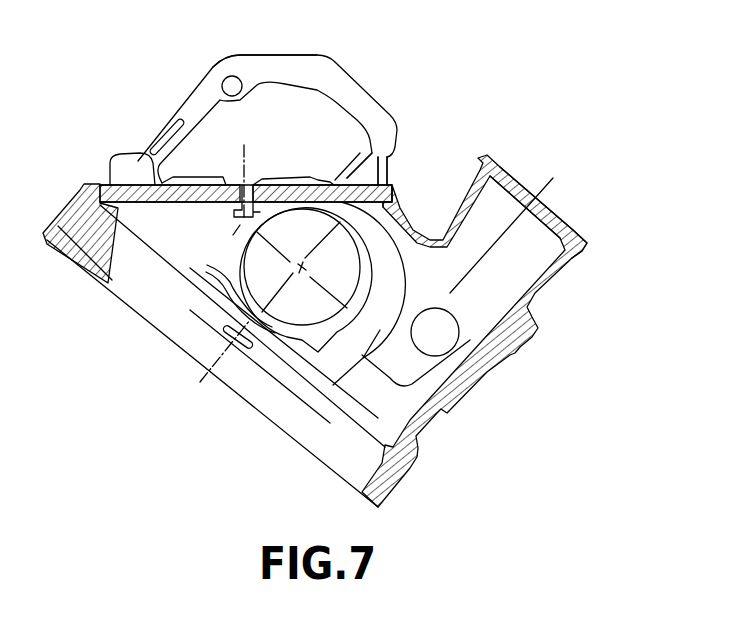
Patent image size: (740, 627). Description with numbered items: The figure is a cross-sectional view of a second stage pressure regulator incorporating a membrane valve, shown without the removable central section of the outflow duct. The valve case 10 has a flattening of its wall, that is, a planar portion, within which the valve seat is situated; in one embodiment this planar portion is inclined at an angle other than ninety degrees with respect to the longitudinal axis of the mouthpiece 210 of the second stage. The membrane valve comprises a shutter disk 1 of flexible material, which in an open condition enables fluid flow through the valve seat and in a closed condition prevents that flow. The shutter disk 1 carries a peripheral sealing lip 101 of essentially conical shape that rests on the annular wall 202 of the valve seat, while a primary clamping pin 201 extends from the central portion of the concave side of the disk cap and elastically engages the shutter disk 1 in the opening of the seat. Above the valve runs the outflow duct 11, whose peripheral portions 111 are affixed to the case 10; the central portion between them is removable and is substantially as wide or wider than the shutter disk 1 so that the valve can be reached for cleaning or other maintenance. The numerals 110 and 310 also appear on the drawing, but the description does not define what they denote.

The shutter disk 1 is at (288, 160).
The case 10 is at (489, 371).
The outflow duct 11 is at (297, 107).
The peripheral sealing lip 101 is at (130, 156).
The block body wall 110 is at (337, 358).
The peripheral portions 111 is at (247, 55).
The primary clamping pin 201 is at (241, 214).
The annular wall 202 is at (386, 159).
The mouthpiece 210 is at (573, 256).
The block end wall 310 is at (147, 203).